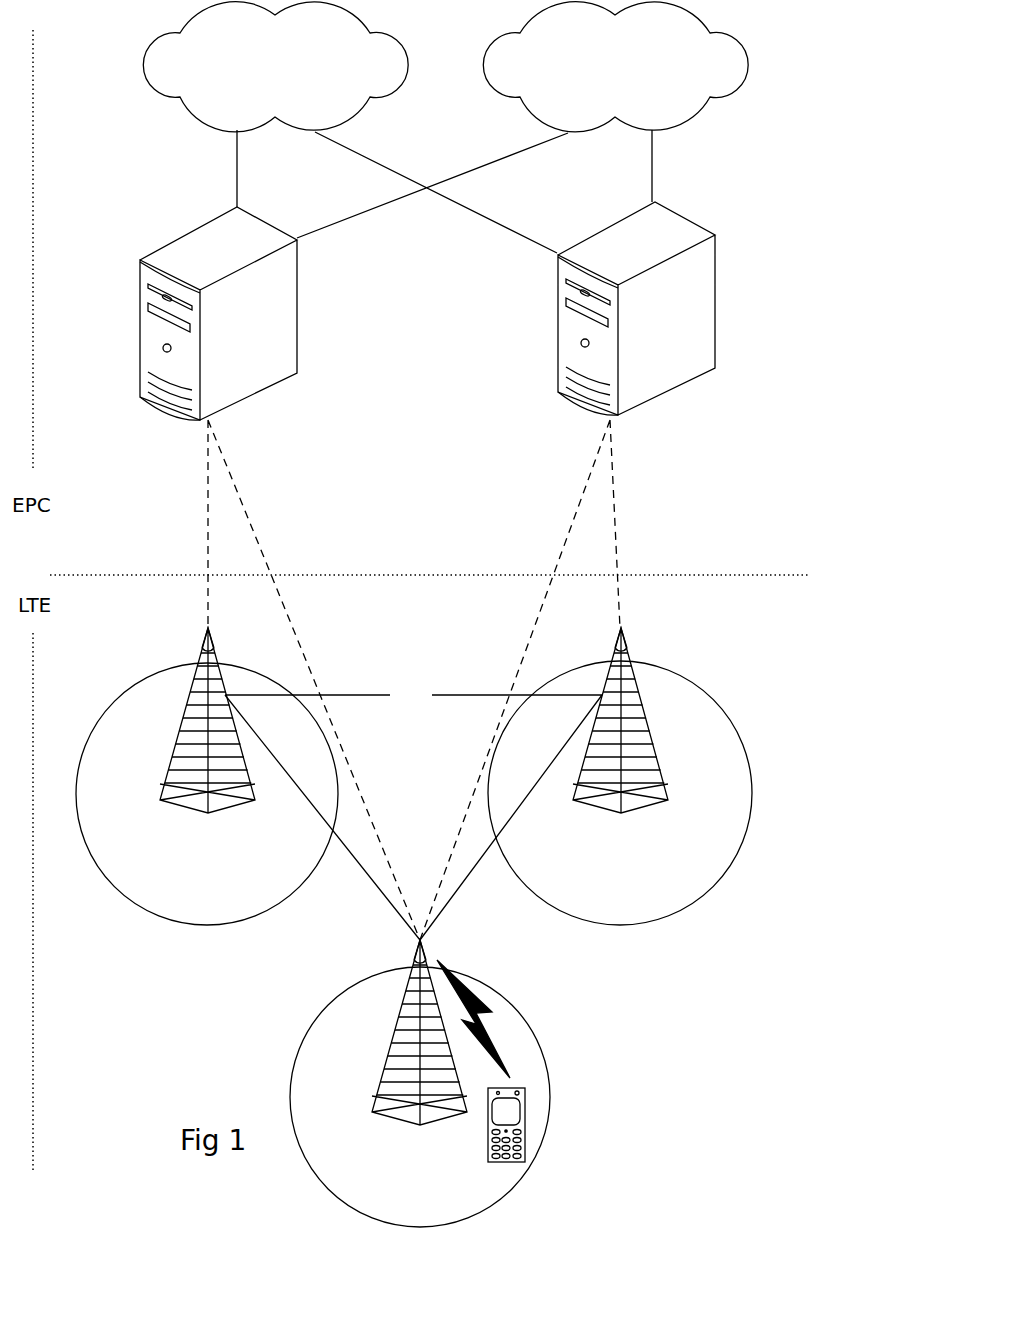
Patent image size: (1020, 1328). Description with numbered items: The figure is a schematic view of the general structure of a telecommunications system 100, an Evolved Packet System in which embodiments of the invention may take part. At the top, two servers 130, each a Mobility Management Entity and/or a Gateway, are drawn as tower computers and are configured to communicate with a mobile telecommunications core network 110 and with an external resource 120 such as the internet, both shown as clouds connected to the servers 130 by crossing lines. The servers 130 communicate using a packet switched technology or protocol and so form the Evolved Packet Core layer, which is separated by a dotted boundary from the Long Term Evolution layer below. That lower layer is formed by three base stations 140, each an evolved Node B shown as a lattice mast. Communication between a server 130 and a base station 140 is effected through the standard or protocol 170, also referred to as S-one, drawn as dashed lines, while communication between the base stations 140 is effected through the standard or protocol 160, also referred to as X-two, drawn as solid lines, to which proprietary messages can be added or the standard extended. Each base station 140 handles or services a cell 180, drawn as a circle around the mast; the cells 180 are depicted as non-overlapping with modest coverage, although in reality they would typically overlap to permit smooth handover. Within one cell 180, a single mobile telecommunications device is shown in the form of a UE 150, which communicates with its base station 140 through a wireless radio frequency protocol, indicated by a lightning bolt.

The telecommunications system 100 is at (152, 155).
The mobile telecommunications core network 110 is at (598, 35).
The external resource 120 is at (258, 51).
The server 130 is at (293, 380).
The base station 140 is at (208, 815).
The UE 150 is at (525, 1123).
The standard or protocol X2 160 is at (358, 887).
The standard or protocol S1 170 is at (584, 490).
The cell 180 is at (197, 925).